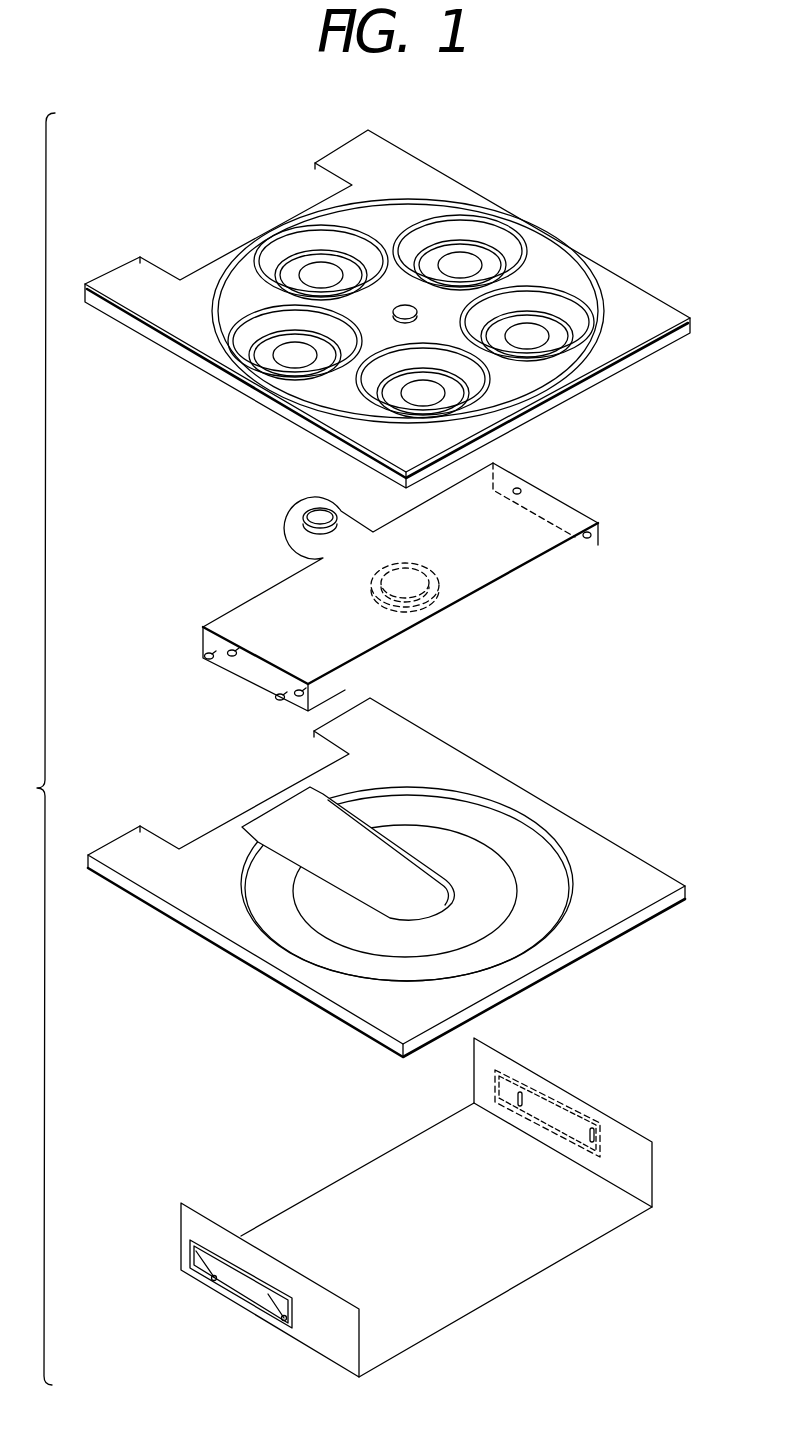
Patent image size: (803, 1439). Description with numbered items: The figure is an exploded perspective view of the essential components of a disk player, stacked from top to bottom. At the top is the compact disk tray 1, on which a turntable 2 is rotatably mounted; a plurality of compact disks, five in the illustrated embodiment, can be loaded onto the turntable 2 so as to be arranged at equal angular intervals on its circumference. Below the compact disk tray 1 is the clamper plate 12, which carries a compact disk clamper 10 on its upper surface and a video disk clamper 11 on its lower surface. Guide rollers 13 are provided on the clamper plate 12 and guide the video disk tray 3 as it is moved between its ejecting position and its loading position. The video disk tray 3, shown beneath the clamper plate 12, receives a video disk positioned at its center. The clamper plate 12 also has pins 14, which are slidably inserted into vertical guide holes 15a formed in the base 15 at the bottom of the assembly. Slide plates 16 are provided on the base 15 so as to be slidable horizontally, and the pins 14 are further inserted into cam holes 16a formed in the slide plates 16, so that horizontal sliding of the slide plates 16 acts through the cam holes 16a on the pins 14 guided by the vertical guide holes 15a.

The compact disk tray 1 is at (431, 179).
The turntable 2 is at (546, 263).
The video disk tray 3 is at (584, 851).
The compact disk clamper 10 is at (317, 514).
The video disk clamper 11 is at (427, 610).
The clamper plate 12 is at (500, 551).
The guide rollers 13 is at (591, 539).
The pins 14 is at (278, 698).
The base 15 is at (364, 1194).
The vertical guide holes 15a is at (653, 1180).
The slide plates 16 is at (588, 1113).
The cam holes 16a is at (190, 1268).